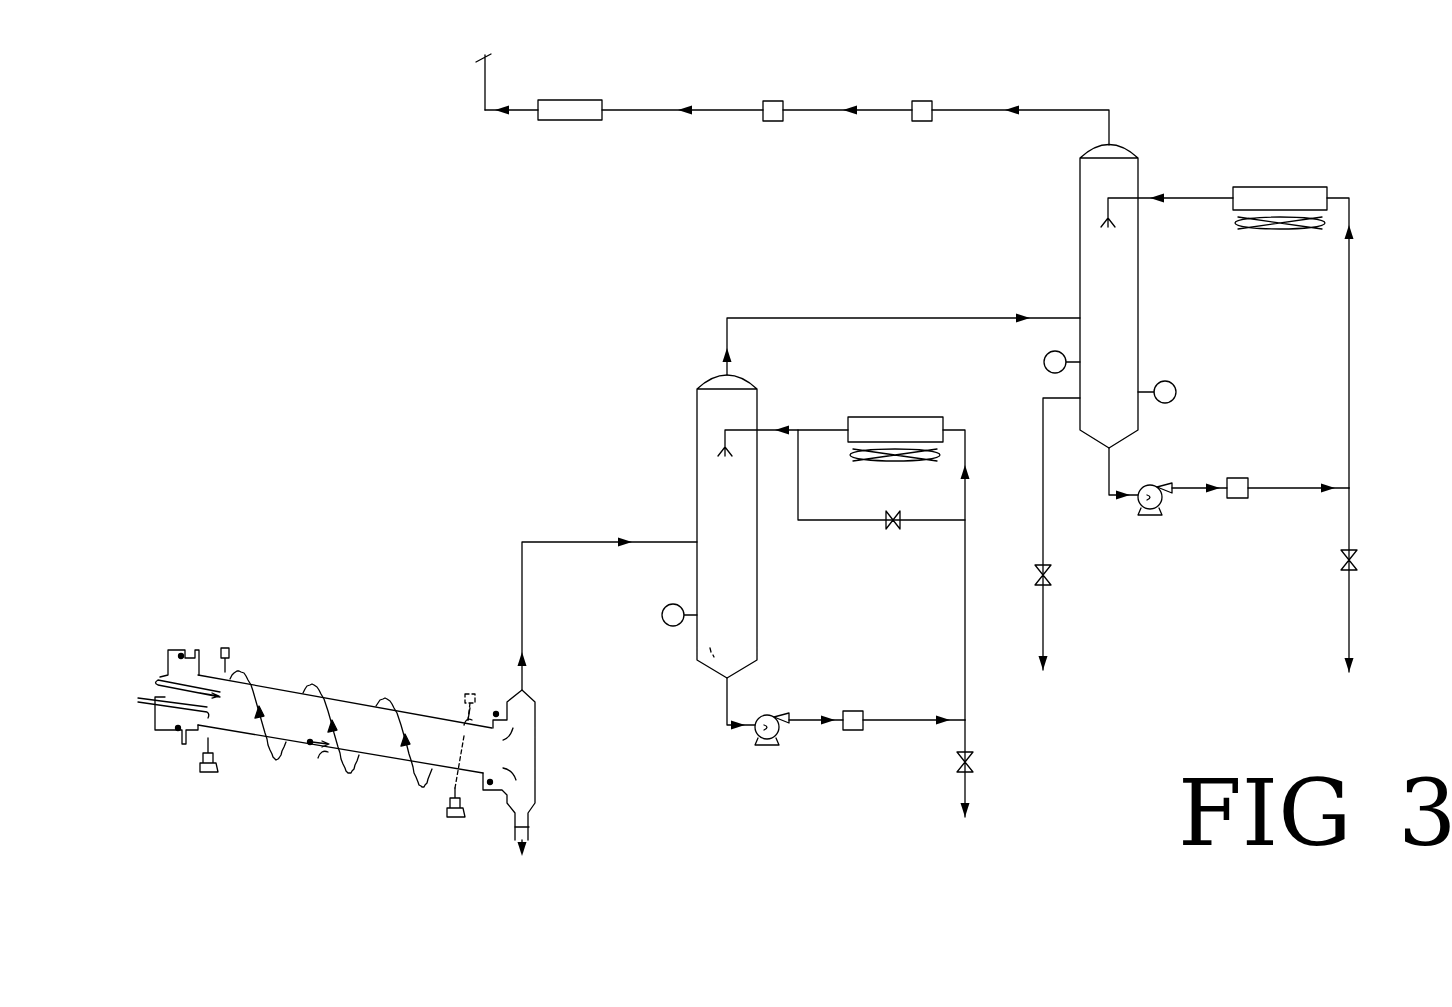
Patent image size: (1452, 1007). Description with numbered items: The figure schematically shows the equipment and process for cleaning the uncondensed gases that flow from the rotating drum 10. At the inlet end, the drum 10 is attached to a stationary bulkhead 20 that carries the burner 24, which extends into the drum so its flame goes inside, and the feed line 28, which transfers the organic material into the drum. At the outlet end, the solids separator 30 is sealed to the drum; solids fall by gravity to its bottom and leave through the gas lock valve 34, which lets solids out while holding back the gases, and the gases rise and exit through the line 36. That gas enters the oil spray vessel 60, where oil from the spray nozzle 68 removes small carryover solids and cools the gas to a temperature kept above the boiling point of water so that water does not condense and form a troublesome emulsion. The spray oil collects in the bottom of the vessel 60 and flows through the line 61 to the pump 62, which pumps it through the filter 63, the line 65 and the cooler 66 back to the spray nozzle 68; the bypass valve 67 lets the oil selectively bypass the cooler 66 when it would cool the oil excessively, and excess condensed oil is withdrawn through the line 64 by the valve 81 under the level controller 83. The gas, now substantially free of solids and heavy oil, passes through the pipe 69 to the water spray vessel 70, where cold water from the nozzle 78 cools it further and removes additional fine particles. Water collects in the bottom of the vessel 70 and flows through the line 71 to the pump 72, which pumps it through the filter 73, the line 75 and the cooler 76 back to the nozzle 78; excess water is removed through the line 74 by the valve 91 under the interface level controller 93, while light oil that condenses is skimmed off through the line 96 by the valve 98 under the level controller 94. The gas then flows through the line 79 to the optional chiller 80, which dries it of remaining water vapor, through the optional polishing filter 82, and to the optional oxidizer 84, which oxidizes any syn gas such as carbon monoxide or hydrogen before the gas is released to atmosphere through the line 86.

The drum 10 is at (264, 675).
The bulkhead 20 is at (172, 650).
The burner 24 is at (158, 681).
The feed line 28 is at (158, 700).
The solids separator 30 is at (535, 748).
The gas lock valve 34 is at (522, 820).
The line 36 is at (675, 542).
The oil spray vessel 60 is at (758, 580).
The line 61 is at (726, 693).
The pump 62 is at (770, 715).
The filter 63 is at (856, 711).
The line 64 is at (967, 738).
The line 65 is at (967, 600).
The cooler 66 is at (895, 417).
The bypass valve 67 is at (890, 516).
The spray nozzle 68 is at (720, 440).
The pipe 69 is at (848, 318).
The water spray vessel 70 is at (1140, 270).
The line 71 is at (1108, 468).
The pump 72 is at (1152, 483).
The filter 73 is at (1245, 478).
The line 74 is at (1349, 525).
The line 75 is at (1349, 318).
The cooler 76 is at (1278, 187).
The spray nozzle 78 is at (1098, 215).
The line 79 is at (1060, 110).
The chiller 80 is at (930, 101).
The valve 81 is at (958, 762).
The filter 82 is at (782, 101).
The level controller 83 is at (662, 617).
The oxidizer 84 is at (590, 100).
The line 86 is at (488, 82).
The valve 91 is at (1355, 562).
The interface level controller 93 is at (1170, 382).
The level controller 94 is at (1044, 362).
The line 96 is at (1045, 635).
The valve 98 is at (1050, 575).